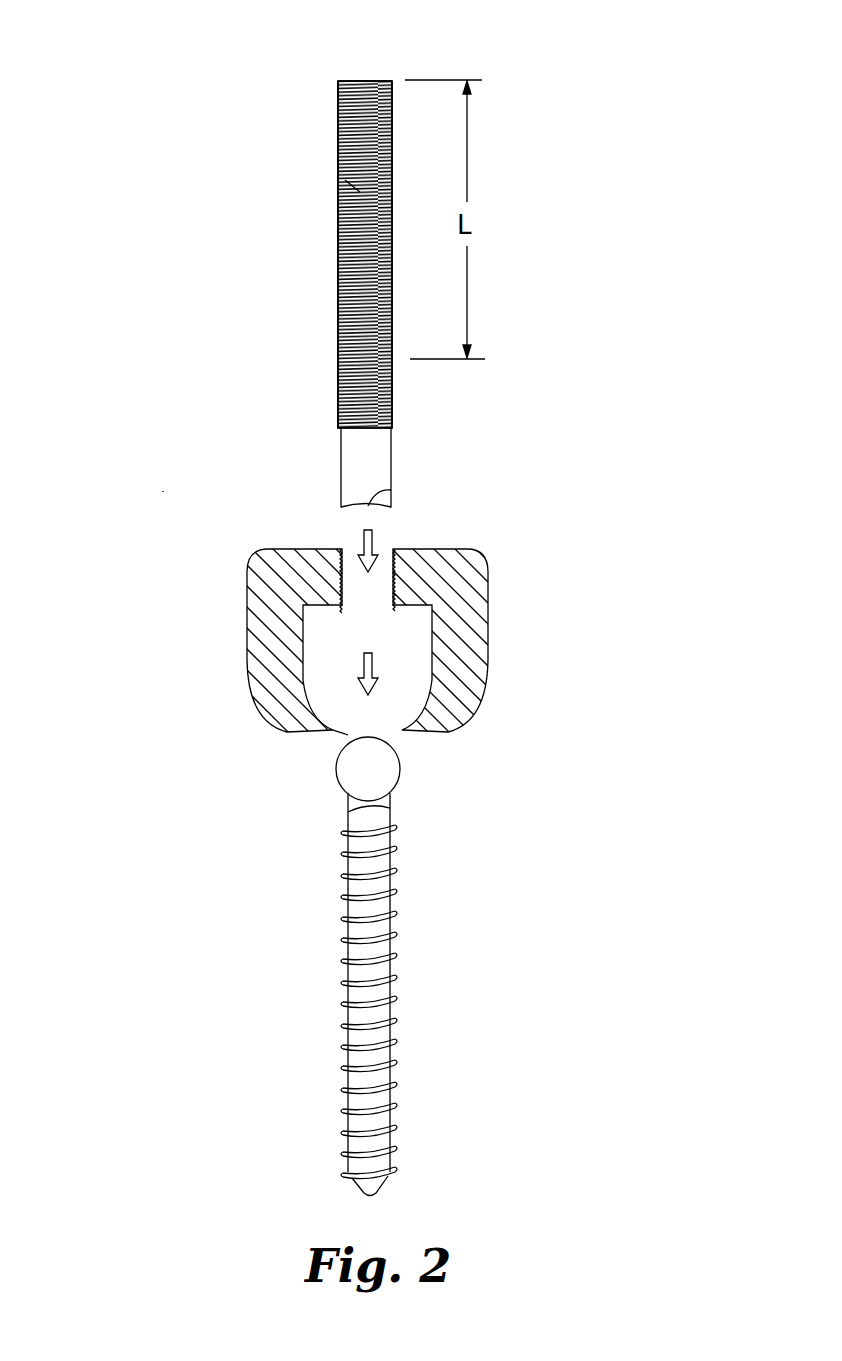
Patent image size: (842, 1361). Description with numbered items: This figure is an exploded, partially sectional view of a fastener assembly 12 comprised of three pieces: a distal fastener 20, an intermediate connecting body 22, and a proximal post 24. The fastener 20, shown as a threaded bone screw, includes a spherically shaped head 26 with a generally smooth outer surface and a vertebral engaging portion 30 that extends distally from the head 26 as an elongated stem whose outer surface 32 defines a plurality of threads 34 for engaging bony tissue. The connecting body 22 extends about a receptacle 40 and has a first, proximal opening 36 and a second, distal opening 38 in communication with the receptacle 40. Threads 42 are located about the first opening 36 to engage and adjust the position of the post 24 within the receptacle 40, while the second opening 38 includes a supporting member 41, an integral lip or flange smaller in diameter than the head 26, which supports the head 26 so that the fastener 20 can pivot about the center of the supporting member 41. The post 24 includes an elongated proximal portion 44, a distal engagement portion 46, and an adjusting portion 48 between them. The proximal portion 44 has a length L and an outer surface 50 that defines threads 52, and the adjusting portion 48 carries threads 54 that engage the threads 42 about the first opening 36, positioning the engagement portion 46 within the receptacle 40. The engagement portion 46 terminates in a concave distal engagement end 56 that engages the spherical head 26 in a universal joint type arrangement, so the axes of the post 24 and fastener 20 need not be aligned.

The fastener assembly 12 is at (164, 491).
The fastener 20 is at (439, 966).
The connecting body 22 is at (400, 597).
The post 24 is at (364, 266).
The head 26 is at (390, 763).
The vertebral engaging portion 30 is at (394, 990).
The outer surface 32 is at (395, 1127).
The threads 34 is at (395, 1073).
The first opening 36 is at (366, 588).
The second opening 38 is at (387, 727).
The receptacle 40 is at (330, 683).
The supporting member 41 is at (336, 737).
The threads 42 is at (338, 575).
The proximal portion 44 is at (337, 124).
The engagement portion 46 is at (341, 455).
The adjusting portion 48 is at (395, 393).
The outer surface 50 is at (339, 232).
The threads 52 is at (340, 178).
The threads 54 is at (339, 397).
The engagement end 56 is at (393, 492).